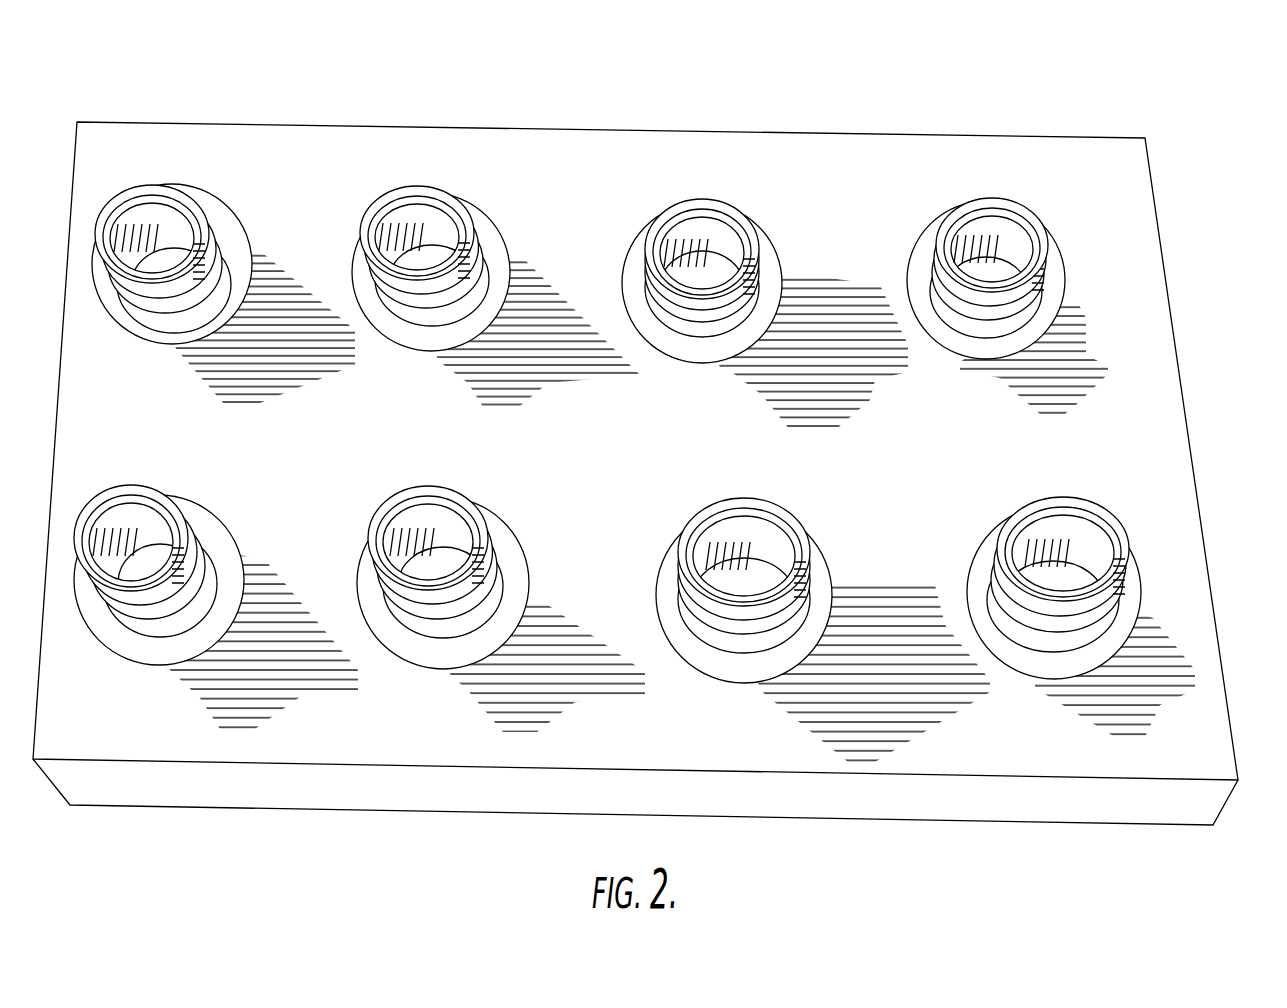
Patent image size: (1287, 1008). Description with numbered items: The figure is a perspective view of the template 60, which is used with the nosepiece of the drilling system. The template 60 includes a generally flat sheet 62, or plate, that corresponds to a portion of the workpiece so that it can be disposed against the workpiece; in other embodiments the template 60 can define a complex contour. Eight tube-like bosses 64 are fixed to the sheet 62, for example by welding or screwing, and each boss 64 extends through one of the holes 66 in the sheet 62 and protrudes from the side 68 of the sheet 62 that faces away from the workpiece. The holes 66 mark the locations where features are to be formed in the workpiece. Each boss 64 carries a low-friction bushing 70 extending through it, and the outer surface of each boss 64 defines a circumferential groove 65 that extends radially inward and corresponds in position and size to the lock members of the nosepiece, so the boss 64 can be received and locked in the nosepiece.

The template 60 is at (1028, 95).
The sheet 62 is at (293, 125).
The boss 64 is at (1052, 235).
The circumferential groove 65 is at (1022, 303).
The hole 66 is at (990, 232).
The side of the sheet 68 is at (608, 153).
The bushing 70 is at (1002, 228).